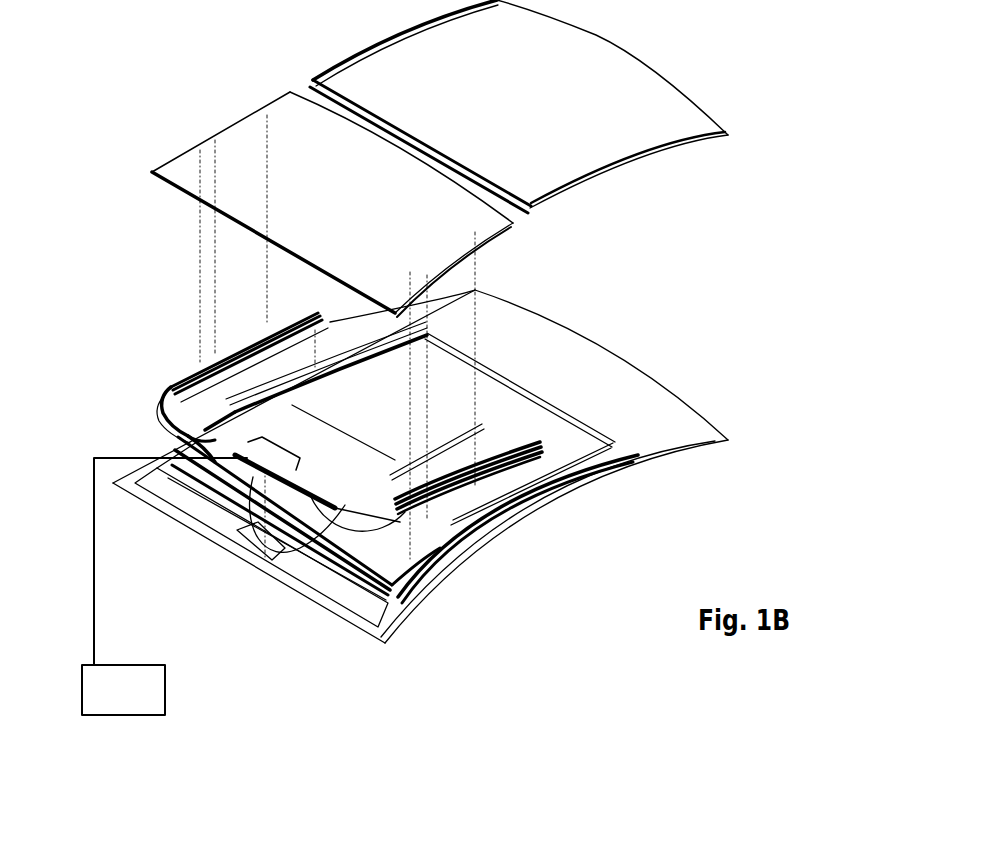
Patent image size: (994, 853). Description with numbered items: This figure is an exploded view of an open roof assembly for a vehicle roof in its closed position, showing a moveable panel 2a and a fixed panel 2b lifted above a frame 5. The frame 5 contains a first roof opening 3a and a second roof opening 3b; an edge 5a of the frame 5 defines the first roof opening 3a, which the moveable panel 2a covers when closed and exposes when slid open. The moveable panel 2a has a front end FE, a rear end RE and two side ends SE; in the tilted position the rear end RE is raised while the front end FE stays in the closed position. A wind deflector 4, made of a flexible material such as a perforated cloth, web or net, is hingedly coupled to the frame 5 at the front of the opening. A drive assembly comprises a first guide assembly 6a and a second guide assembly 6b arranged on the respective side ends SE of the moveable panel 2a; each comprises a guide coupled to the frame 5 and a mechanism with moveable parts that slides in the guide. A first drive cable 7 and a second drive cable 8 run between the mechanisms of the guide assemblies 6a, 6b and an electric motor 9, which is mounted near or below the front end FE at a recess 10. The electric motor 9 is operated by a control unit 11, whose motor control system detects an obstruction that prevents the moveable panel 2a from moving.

The moveable panel 2a is at (332, 204).
The fixed panel 2b is at (519, 106).
The first roof opening 3a is at (320, 468).
The second roof opening 3b is at (502, 429).
The wind deflector 4 is at (163, 463).
The frame 5 is at (467, 584).
The edge 5a is at (452, 507).
The first guide assembly 6a is at (480, 490).
The second guide assembly 6b is at (175, 357).
The first drive cable 7 is at (268, 586).
The second drive cable 8 is at (172, 412).
The electric motor 9 is at (220, 507).
The recess 10 is at (267, 517).
The control unit 11 is at (164, 586).
The rear end RE is at (340, 117).
The side end SE is at (227, 128).
The front end FE is at (238, 243).